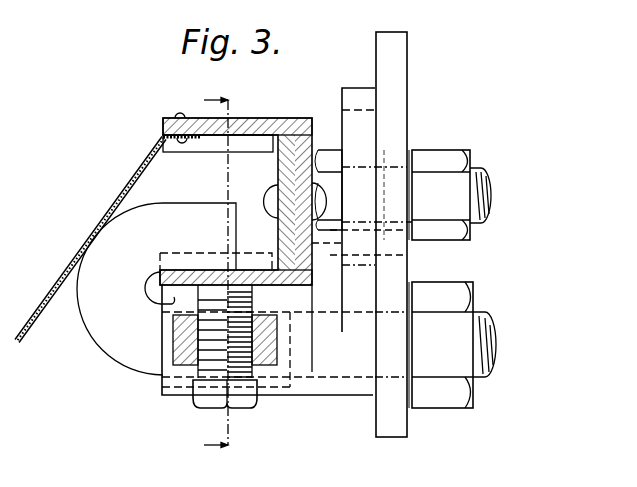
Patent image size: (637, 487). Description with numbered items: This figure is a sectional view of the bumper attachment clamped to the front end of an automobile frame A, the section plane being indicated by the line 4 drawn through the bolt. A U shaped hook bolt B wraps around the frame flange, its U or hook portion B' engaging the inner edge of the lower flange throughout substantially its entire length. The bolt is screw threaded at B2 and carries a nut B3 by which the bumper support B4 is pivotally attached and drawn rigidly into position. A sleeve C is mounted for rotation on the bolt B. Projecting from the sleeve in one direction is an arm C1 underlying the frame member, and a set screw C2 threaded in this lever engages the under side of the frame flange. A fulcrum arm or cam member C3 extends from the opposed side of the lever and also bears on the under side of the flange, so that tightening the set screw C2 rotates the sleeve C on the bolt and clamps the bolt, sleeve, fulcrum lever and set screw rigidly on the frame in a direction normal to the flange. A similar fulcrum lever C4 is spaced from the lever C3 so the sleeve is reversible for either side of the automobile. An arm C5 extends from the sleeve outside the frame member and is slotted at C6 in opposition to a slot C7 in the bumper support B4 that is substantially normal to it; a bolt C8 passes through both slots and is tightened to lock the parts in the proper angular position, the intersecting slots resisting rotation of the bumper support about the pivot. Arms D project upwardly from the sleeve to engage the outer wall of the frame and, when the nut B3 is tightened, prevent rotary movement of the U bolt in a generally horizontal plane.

The front end of automobile frame A is at (259, 122).
The U or hook portion B' is at (144, 239).
The U shaped hook bolt B is at (336, 399).
The screw threaded portion B2 is at (485, 312).
The nut B3 is at (463, 404).
The bumper support B4 is at (398, 52).
The sleeve C is at (317, 388).
The arm C1 is at (183, 344).
The set screw C2 is at (207, 396).
The fulcrum arm or cam member C3 is at (170, 291).
The fulcrum lever C4 is at (290, 388).
The arm C5 is at (353, 92).
The slot C6 is at (347, 137).
The slot C7 is at (388, 165).
The bolt C8 is at (483, 186).
The arms D is at (333, 235).
The section line 4- 4 is at (219, 274).